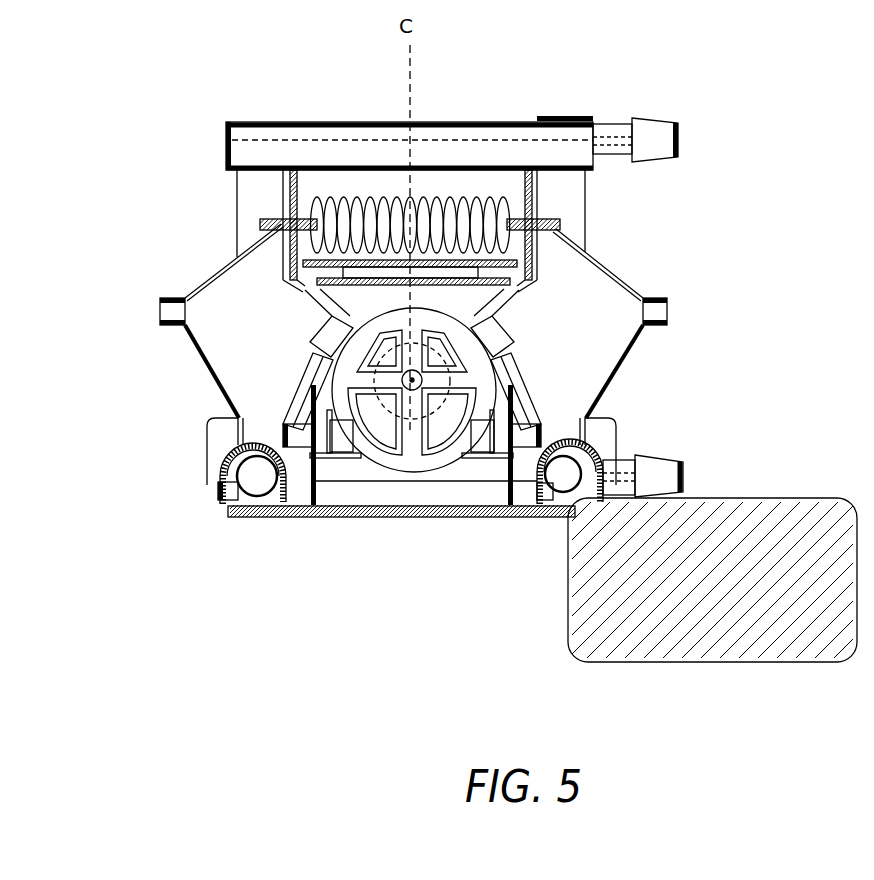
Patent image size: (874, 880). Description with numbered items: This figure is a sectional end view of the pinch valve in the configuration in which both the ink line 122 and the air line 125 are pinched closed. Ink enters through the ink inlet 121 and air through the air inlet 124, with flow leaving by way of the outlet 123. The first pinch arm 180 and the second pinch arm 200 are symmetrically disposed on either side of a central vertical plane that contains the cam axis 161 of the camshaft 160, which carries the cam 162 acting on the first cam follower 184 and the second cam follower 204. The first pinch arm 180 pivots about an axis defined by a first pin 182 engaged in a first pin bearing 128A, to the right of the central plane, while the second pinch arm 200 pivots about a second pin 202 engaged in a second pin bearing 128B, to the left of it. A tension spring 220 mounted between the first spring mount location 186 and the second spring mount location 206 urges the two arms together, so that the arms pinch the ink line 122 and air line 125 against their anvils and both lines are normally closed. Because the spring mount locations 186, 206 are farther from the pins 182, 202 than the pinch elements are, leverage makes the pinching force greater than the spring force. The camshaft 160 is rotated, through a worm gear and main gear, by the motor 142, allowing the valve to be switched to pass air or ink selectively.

The air inlet 124 is at (262, 104).
The ink inlet 121 is at (694, 138).
The ink line 122 is at (575, 207).
The air line 125 is at (263, 197).
The spring 220 is at (433, 200).
The second spring mount location 206 is at (258, 245).
The first spring mount location 186 is at (580, 248).
The second (air line) pinch arm 200 is at (170, 312).
The first (ink line) pinch arm 180 is at (660, 312).
The second cam follower 204 is at (323, 323).
The first cam follower 184 is at (490, 325).
The camshaft 160 is at (392, 393).
The cam axis 161 is at (412, 382).
The cam 162 is at (413, 474).
The first pin bearing 128A is at (513, 481).
The second pin bearing 128B is at (217, 482).
The second pin 202 is at (252, 490).
The first pin 182 is at (556, 517).
The outlet 123 is at (690, 476).
The motor 142 is at (648, 620).